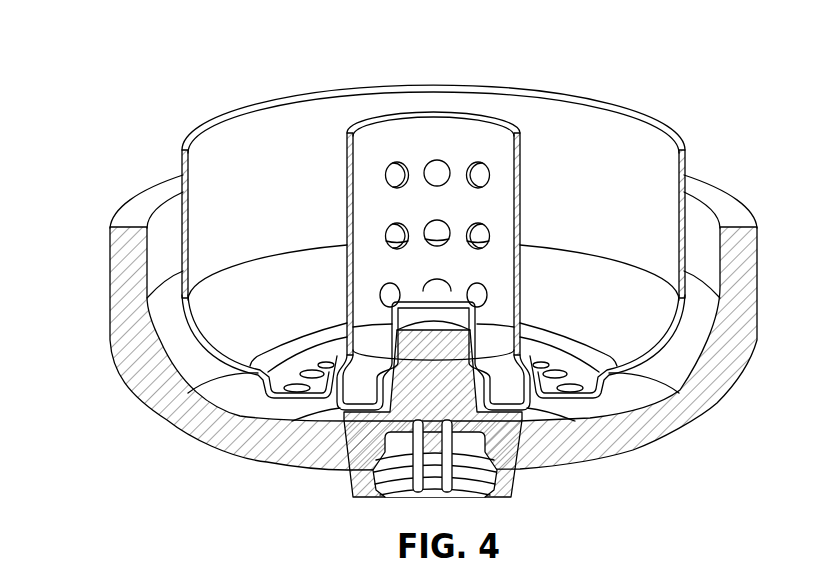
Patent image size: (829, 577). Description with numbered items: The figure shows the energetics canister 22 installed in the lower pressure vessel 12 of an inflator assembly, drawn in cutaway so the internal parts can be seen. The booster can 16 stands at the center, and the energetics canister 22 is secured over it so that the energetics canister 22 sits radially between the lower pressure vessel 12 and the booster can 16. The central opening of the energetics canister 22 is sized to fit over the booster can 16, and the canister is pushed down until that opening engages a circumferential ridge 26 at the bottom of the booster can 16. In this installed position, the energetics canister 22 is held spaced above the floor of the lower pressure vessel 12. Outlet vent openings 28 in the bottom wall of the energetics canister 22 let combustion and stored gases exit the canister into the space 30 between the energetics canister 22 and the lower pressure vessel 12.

The lower pressure vessel 12 is at (208, 428).
The booster can 16 is at (487, 137).
The energetics canister 22 is at (234, 137).
The circumferential ridge 26 is at (547, 403).
The outlet vent openings 28 is at (557, 371).
The space 30 is at (160, 205).